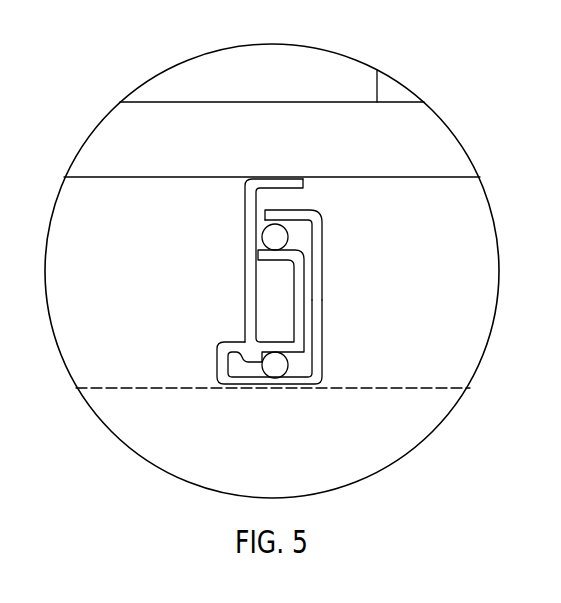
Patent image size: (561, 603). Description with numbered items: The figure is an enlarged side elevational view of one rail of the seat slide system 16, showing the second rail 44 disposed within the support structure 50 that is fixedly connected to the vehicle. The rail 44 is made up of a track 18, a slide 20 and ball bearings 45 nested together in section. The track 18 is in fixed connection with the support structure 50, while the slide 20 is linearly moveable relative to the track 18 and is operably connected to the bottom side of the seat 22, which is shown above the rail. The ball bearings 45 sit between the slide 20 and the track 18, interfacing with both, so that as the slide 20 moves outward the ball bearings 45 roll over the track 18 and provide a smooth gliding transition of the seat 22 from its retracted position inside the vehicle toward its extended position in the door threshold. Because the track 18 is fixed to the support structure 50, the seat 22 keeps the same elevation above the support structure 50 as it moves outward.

The slide system 16 is at (353, 292).
The track 18 is at (293, 388).
The slide 20 is at (245, 272).
The seat 22 is at (344, 72).
The second rail 44 is at (218, 252).
The ball bearings 45 is at (278, 237).
The support structure 50 is at (153, 372).